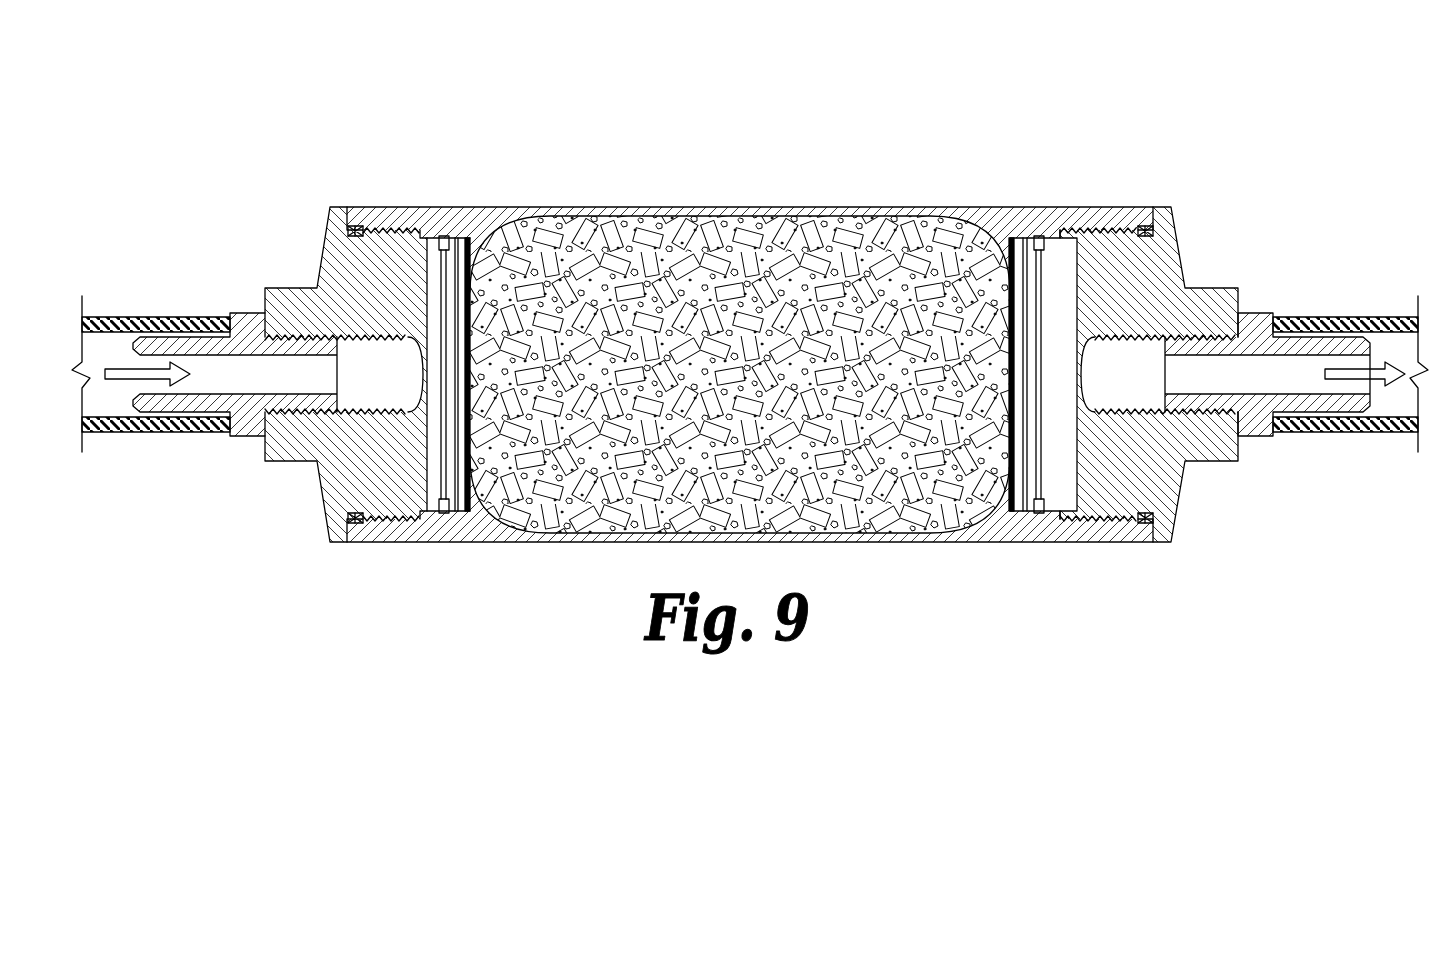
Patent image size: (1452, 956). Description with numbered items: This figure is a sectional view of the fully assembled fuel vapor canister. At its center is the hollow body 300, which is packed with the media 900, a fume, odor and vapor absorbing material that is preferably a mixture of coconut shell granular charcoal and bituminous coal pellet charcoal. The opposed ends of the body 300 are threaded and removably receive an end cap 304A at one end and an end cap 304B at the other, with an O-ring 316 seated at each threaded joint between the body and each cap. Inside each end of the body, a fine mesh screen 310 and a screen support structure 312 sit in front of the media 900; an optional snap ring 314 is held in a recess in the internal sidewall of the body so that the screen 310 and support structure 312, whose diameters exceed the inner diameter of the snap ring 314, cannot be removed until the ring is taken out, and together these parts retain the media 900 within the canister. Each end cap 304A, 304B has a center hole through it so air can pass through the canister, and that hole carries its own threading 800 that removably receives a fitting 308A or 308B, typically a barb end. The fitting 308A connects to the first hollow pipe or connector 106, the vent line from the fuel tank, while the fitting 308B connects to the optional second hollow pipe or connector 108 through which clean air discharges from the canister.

The first hollow pipe or connector 106 is at (103, 423).
The second hollow pipe/connector 108 is at (1378, 425).
The hollow body 300 is at (790, 207).
The end cap 304A is at (357, 267).
The end cap 304B is at (1143, 267).
The fitting 308A is at (242, 317).
The fitting 308B is at (1260, 323).
The fine mesh screen 310 is at (478, 292).
The screen support structure 312 is at (450, 327).
The snap ring 314 is at (449, 247).
The O-ring 316 is at (352, 226).
The threading 800 is at (1128, 395).
The media 900 is at (882, 450).